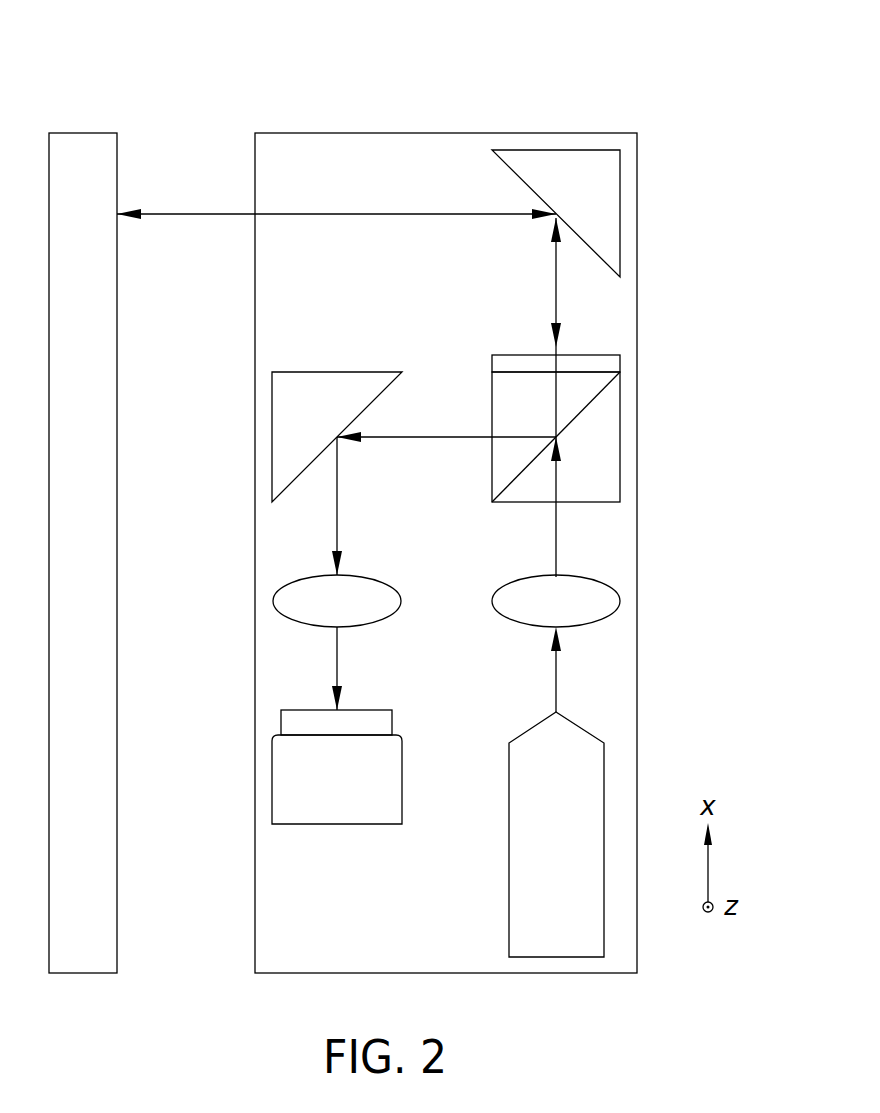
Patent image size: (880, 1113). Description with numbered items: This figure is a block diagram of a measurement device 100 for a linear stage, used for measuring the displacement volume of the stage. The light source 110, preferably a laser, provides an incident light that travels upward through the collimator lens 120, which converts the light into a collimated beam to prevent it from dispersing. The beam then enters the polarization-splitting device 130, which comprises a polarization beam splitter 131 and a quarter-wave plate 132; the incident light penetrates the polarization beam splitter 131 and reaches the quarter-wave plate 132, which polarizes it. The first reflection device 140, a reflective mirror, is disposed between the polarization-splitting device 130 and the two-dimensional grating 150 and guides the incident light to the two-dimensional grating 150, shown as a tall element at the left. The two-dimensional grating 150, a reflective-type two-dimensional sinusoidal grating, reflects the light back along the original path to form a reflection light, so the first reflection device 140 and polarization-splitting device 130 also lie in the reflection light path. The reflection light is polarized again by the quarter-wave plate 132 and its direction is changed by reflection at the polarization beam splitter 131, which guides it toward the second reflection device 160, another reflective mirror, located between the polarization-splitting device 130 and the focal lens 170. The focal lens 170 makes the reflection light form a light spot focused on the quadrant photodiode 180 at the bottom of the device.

The measurement device for linear stage 100 is at (626, 84).
The light source 110 is at (605, 761).
The collimator lens 120 is at (607, 601).
The polarization-splitting device 130 is at (635, 424).
The polarization beam splitter 131 is at (607, 472).
The quarter-wave plate 132 is at (607, 363).
The first reflection device 140 is at (607, 212).
The two-dimensional grating 150 is at (77, 150).
The second reflection device 160 is at (287, 439).
The focal lens 170 is at (287, 600).
The quadrant photodiode 180 is at (288, 789).